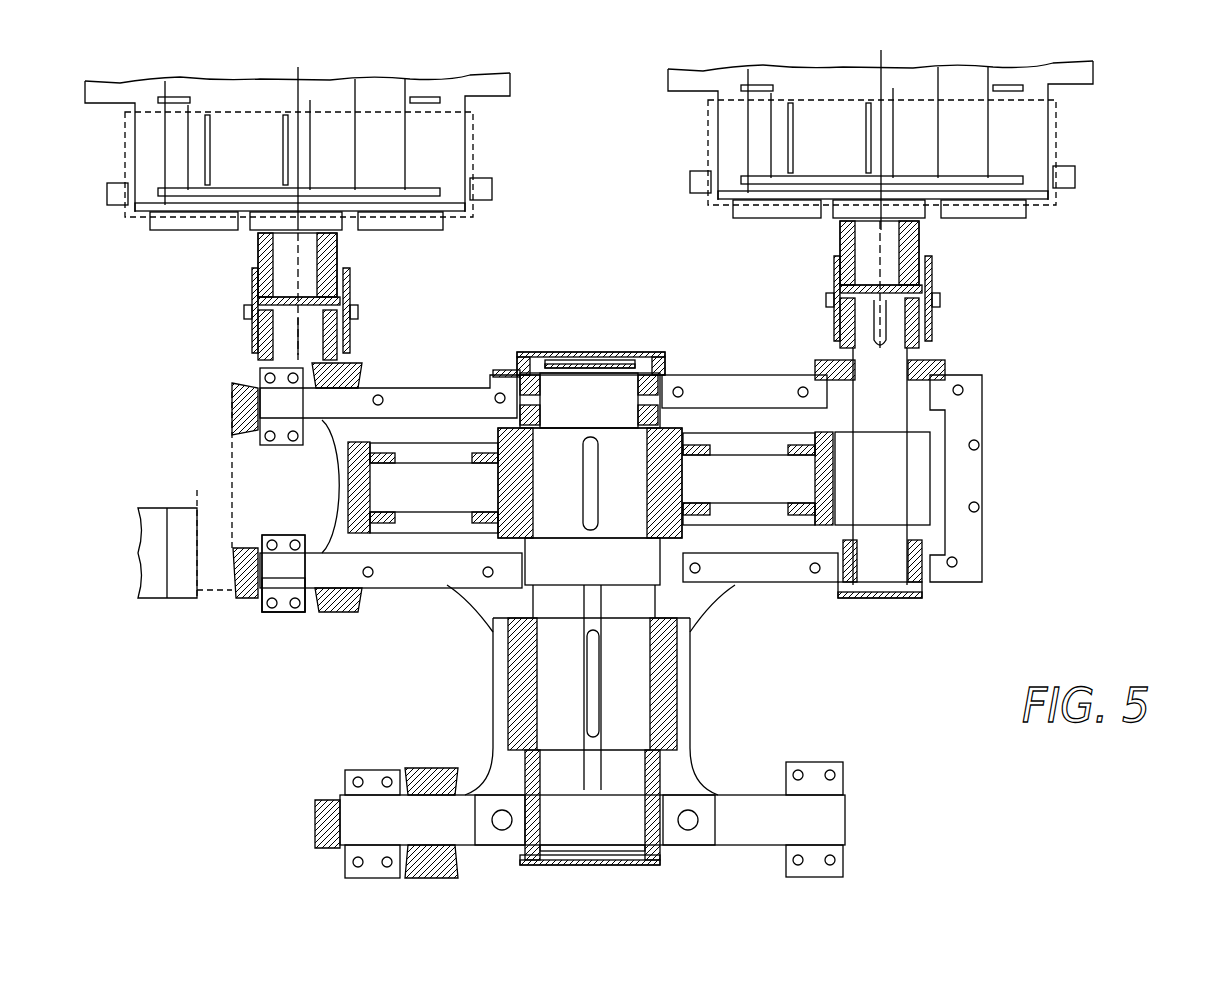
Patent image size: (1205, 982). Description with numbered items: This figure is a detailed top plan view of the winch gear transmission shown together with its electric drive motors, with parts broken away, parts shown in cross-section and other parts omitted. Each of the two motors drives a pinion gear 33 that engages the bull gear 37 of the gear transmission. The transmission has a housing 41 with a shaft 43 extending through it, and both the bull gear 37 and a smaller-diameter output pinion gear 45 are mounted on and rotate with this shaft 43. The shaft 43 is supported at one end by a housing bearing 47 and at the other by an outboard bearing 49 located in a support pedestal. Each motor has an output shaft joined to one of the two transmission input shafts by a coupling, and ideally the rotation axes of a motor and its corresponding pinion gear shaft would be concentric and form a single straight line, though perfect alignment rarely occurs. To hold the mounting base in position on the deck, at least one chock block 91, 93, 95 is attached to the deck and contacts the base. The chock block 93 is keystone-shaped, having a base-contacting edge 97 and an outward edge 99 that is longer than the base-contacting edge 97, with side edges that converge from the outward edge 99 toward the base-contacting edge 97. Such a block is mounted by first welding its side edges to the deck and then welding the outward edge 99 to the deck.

The pinion gear 33 is at (932, 475).
The bull gear 37 is at (350, 483).
The housing 41 is at (985, 400).
The shaft 43 is at (533, 615).
The output pinion gear 45 is at (678, 697).
The housing bearing 47 is at (660, 365).
The outboard bearing 49 is at (530, 860).
The chock block 91 is at (362, 370).
The chock block 93 is at (222, 565).
The chock block 95 is at (345, 612).
The base-contacting edge 97 is at (290, 580).
The outward edge 99 is at (258, 575).